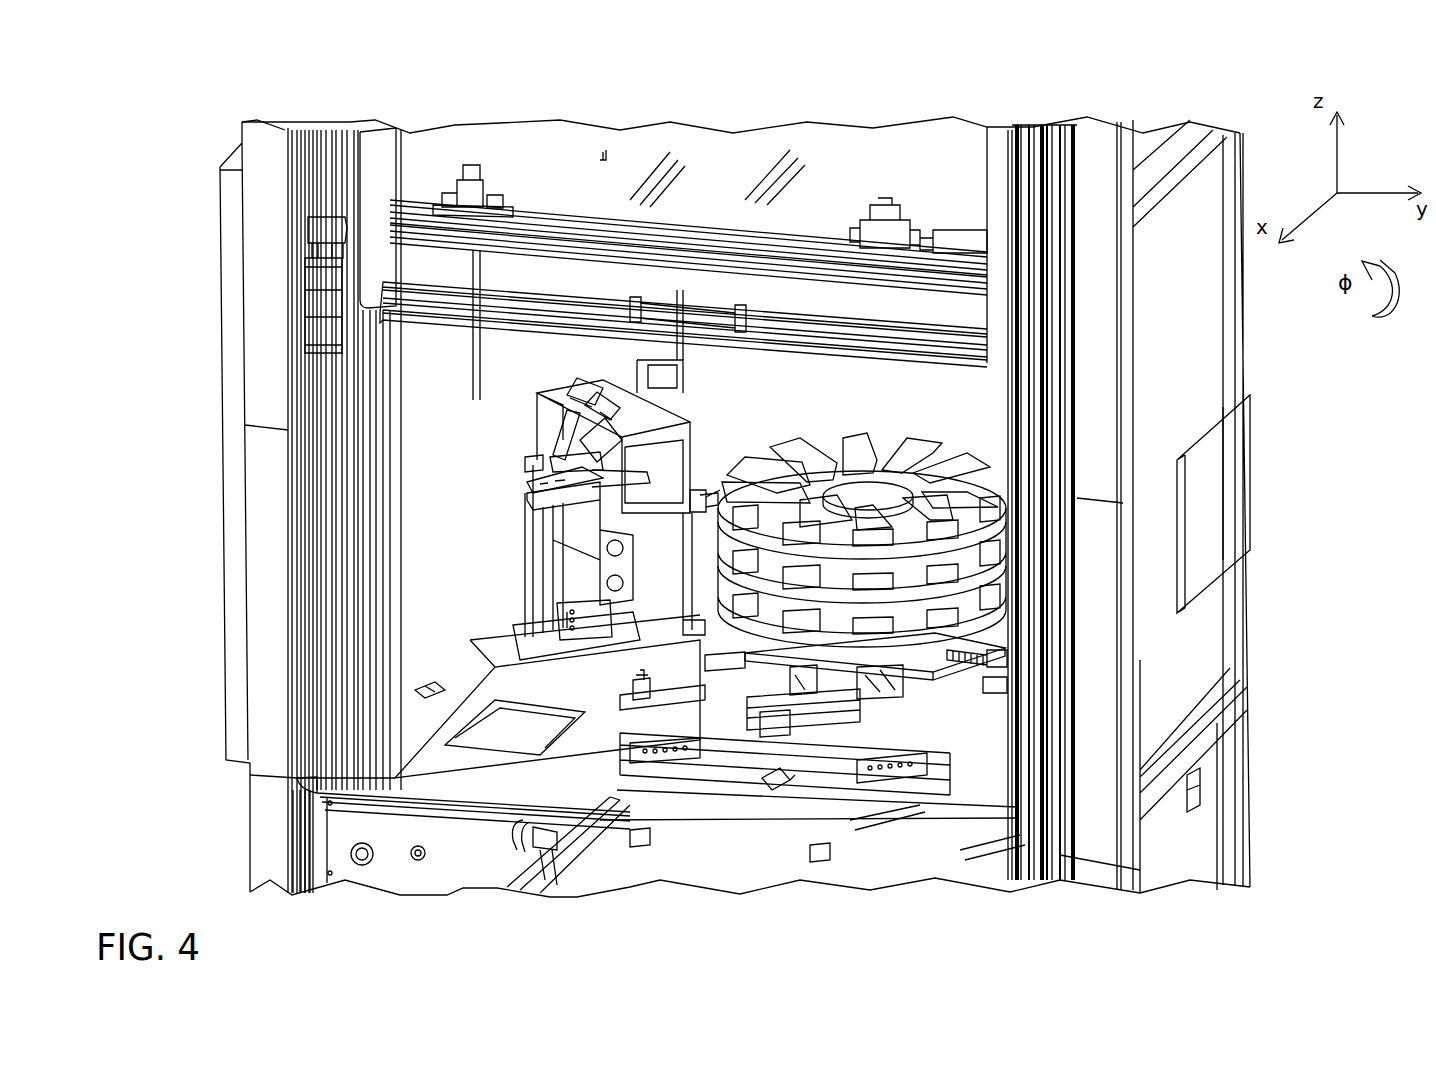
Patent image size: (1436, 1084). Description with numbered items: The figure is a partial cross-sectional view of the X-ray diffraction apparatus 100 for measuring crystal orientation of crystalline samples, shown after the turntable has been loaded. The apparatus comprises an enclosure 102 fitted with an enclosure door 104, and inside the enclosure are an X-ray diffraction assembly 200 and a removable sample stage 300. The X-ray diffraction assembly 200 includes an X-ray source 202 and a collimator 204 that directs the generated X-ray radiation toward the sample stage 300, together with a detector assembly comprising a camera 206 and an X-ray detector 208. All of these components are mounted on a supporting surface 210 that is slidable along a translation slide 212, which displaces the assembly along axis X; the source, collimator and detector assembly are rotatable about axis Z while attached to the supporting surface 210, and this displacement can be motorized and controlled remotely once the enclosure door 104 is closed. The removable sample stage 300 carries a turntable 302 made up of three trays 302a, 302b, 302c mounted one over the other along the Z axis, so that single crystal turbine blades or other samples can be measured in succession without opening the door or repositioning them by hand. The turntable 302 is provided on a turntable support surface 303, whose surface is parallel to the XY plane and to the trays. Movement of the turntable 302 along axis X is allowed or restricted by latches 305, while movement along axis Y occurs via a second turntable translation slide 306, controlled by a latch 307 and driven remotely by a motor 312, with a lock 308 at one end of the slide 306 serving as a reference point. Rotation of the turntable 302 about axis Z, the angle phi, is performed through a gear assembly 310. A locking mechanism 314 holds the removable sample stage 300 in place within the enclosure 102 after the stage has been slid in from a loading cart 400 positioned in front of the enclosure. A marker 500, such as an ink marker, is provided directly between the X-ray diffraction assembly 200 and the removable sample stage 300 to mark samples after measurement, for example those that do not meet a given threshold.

The X-ray diffraction apparatus 100 is at (156, 74).
The enclosure 102 is at (450, 342).
The enclosure door 104 is at (833, 297).
The X-ray diffraction assembly 200 is at (492, 560).
The X-ray source 202 is at (537, 506).
The collimator 204 is at (545, 480).
The camera 206 is at (577, 378).
The X-ray detector 208 is at (657, 457).
The supporting surface 210 is at (622, 668).
The translation slide 212 is at (795, 660).
The removable sample stage 300 is at (925, 660).
The turntable 302 is at (870, 650).
The tray 302a is at (967, 520).
The tray 302b is at (967, 567).
The tray 302c is at (973, 610).
The turntable support surface 303 is at (960, 712).
The latches 305 is at (845, 660).
The second turntable translation slide 306 is at (640, 712).
The latch 307 is at (813, 697).
The lock 308 is at (640, 688).
The gear assembly 310 is at (700, 648).
The motor 312 is at (962, 665).
The locking mechanism 314 is at (777, 785).
The loading cart 400 is at (633, 870).
The marker 500 is at (700, 493).